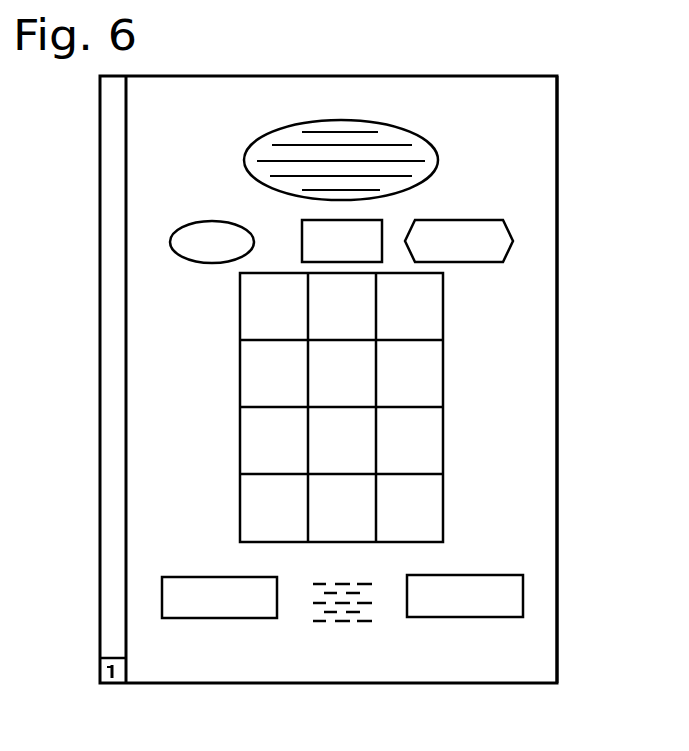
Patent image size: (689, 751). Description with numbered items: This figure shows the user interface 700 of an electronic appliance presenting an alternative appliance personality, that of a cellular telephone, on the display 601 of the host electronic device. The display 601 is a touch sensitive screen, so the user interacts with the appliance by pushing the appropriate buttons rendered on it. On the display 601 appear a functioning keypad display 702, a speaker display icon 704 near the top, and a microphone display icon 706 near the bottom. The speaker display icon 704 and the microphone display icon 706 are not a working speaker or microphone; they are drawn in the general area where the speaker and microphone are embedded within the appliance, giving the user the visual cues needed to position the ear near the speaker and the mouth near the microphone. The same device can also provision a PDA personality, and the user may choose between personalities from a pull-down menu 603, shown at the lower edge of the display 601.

The telephone handset 700 is at (550, 50).
The housing 601 is at (540, 138).
The speaker 704 is at (427, 167).
The keypad 702 is at (433, 363).
The microphone 706 is at (340, 623).
The hinge latch 603 is at (103, 670).